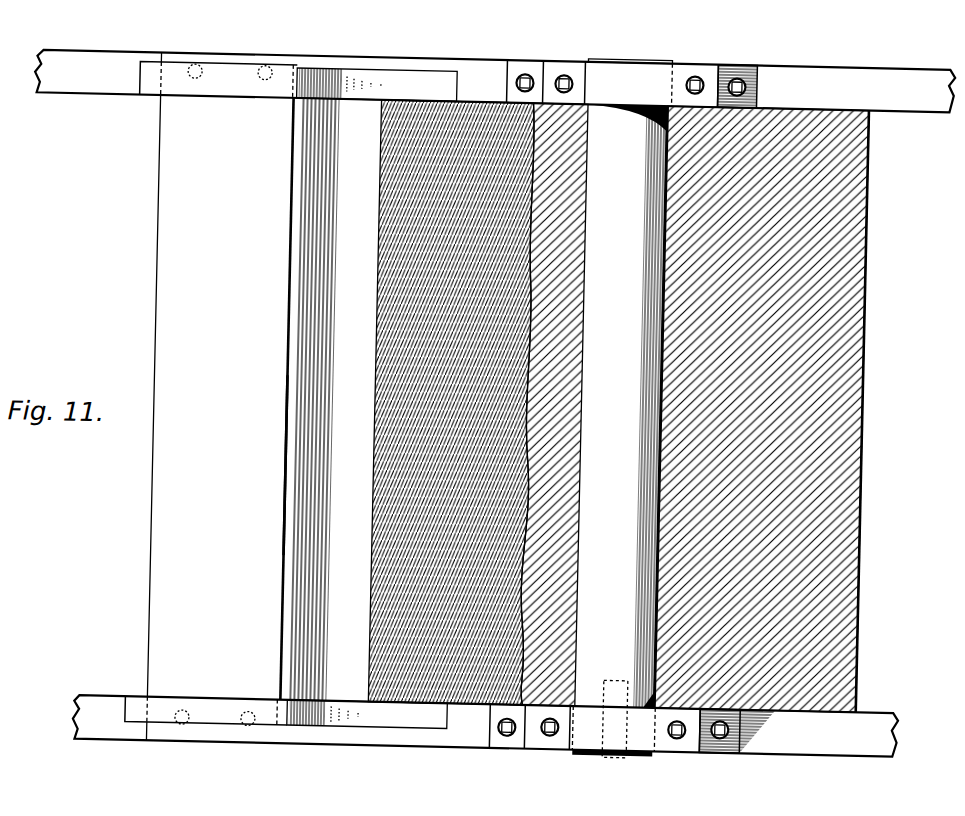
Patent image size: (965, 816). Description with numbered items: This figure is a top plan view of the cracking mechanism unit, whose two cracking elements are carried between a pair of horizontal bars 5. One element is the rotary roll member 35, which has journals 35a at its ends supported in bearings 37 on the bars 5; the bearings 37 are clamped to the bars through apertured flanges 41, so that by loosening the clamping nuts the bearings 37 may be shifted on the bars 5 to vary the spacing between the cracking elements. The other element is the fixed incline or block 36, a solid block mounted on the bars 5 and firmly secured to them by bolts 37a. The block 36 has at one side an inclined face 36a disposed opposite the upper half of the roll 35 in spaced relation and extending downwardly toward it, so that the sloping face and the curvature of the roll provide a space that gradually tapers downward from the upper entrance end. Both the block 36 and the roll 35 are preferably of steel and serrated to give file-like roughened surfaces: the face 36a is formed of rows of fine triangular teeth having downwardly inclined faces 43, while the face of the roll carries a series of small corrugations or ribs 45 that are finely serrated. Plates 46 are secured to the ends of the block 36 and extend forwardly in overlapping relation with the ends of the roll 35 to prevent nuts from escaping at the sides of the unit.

The horizontal bars 5 is at (487, 404).
The rotary roll member 35 is at (761, 409).
The journals 35a is at (593, 405).
The fixed incline 36 is at (220, 397).
The inclined face 36a is at (286, 466).
The bearings 37 is at (668, 68).
The bolts 37a is at (192, 85).
The apertured flanges 41 is at (735, 63).
The downwardly inclined faces 43 is at (317, 352).
The corrugations or ribs 45 is at (386, 435).
The plates 46 is at (393, 77).